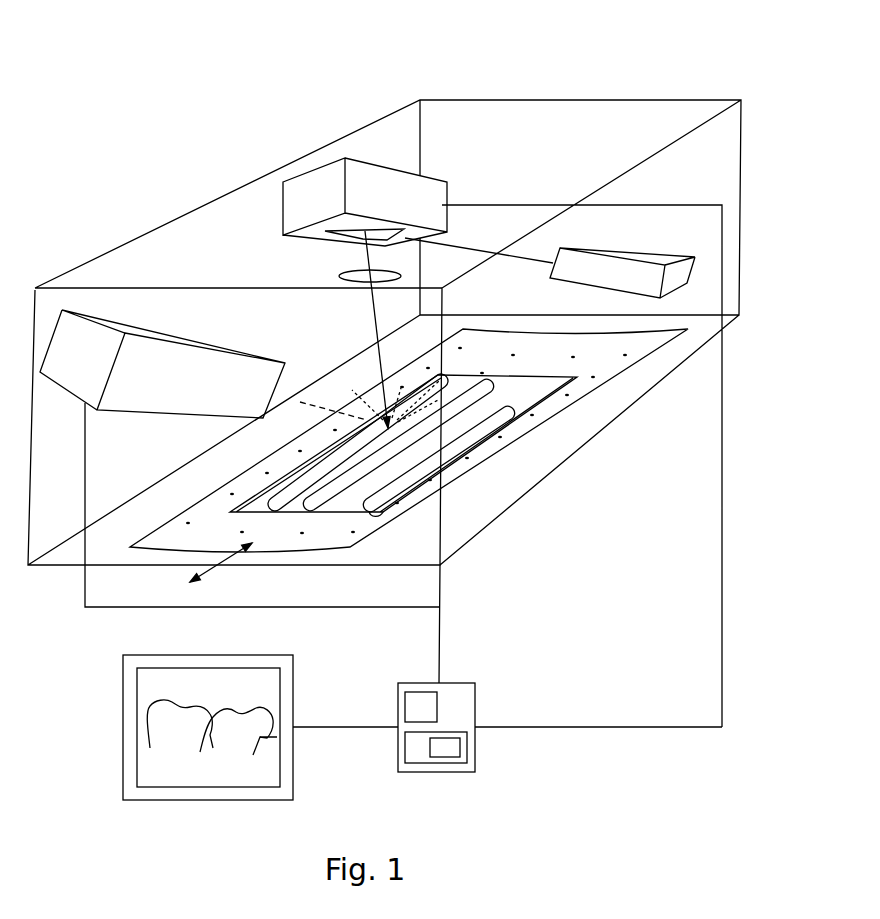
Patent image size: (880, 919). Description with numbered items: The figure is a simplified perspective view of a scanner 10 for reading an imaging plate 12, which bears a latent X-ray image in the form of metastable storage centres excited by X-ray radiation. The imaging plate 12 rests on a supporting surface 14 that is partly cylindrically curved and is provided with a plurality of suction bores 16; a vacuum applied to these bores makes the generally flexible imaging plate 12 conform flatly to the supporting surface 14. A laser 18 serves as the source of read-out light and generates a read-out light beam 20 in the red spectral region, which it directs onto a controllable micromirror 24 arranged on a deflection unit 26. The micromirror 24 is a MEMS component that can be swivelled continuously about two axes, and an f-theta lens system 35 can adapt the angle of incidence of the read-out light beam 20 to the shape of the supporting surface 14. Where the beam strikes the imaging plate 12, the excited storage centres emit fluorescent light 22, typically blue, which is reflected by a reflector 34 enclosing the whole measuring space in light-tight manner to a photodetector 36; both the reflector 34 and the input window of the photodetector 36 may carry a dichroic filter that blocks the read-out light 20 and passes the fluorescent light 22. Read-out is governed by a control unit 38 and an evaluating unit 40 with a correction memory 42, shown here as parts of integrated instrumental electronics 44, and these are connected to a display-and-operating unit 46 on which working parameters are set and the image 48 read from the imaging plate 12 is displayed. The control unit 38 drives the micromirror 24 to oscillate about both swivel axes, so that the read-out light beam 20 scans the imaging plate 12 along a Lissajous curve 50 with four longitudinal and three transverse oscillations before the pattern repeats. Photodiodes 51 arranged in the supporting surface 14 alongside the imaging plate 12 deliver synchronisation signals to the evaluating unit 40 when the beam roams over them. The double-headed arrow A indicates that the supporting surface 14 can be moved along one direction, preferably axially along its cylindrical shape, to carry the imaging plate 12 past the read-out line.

The scanner 10 is at (214, 174).
The imaging plate 12 is at (485, 418).
The supporting surface 14 is at (553, 408).
The suction bores 16 is at (623, 358).
The laser 18 is at (620, 253).
The read-out light beam 20 is at (460, 245).
The fluorescent light 22 is at (322, 408).
The micromirror 24 is at (350, 233).
The deflection unit 26 is at (370, 173).
The reflector 34 is at (495, 100).
The f-theta lens system 35 is at (343, 274).
The photodetector 36 is at (152, 393).
The control unit 38 is at (413, 700).
The evaluating unit 40 is at (423, 752).
The correction memory 42 is at (455, 748).
The integrated instrumental electronics 44 is at (465, 703).
The display-and-operating unit 46 is at (202, 793).
The image 48 is at (175, 728).
The Lissajous curve 50 is at (429, 478).
The photodiodes 51 is at (378, 514).
The double-headed arrow A is at (213, 572).